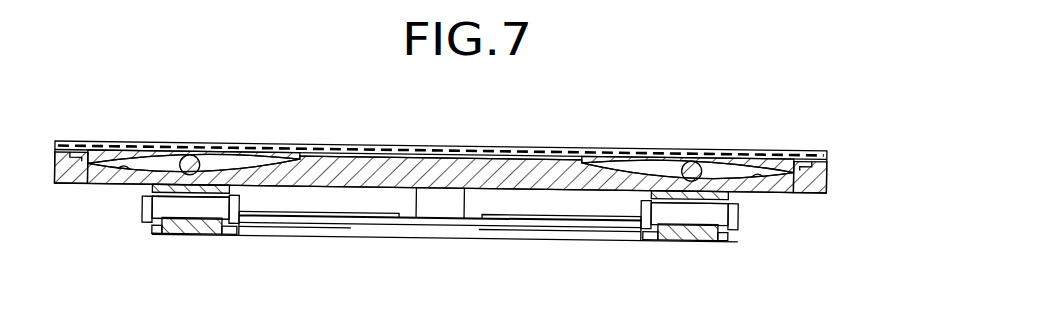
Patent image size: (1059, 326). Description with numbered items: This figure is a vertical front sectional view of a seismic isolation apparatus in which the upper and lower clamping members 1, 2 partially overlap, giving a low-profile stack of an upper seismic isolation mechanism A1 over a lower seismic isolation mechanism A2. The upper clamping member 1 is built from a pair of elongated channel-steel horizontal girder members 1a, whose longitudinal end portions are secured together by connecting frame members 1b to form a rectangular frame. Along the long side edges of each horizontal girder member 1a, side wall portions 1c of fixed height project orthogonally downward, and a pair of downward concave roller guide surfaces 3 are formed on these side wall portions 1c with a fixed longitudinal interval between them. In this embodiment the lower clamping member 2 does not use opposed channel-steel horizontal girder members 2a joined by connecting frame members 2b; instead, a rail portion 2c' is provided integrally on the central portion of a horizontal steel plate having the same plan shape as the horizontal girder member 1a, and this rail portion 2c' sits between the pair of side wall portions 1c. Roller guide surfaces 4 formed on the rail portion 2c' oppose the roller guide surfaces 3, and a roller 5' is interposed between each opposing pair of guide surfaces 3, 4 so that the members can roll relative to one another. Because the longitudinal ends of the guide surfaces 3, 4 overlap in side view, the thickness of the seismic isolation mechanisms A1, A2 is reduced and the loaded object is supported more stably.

The upper clamping member 1 is at (788, 138).
The horizontal girder member 1a is at (549, 140).
The connecting frame member 1b is at (350, 224).
The side wall portion 1c is at (606, 148).
The lower clamping member 2 is at (268, 237).
The horizontal girder member 2a is at (68, 185).
The connecting frame member 2b is at (465, 233).
The rail portion 2c' is at (498, 188).
The upper roller guide surface 3 is at (156, 150).
The lower roller guide surface 4 is at (124, 168).
The roller 5' is at (440, 186).
The upper seismic isolation mechanism A1 is at (836, 158).
The lower seismic isolation mechanism A2 is at (833, 209).